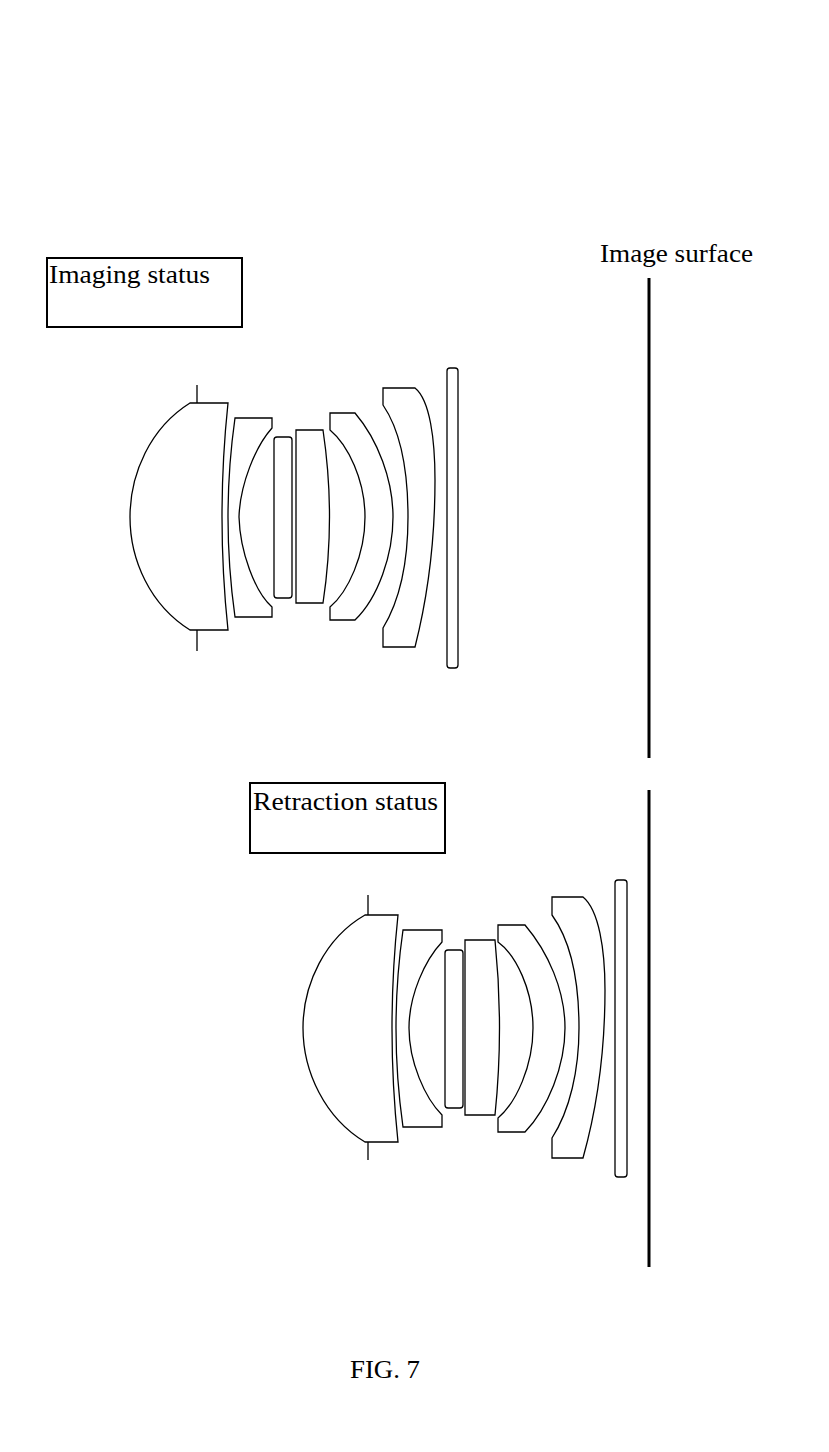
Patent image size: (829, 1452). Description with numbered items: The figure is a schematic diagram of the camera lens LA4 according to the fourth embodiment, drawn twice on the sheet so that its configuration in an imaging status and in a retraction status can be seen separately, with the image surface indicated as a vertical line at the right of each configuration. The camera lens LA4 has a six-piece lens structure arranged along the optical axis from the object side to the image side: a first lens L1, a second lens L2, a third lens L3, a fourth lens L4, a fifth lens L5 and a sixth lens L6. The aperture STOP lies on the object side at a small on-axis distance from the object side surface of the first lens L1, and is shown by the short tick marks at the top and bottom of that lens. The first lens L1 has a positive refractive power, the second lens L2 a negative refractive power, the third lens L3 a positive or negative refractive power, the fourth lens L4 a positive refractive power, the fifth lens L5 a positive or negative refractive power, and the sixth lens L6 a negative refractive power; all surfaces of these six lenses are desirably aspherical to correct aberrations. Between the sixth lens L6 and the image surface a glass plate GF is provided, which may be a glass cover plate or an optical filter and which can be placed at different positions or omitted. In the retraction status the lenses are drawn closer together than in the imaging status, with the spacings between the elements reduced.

The camera lens LA4 is at (298, 345).
The aperture STOP is at (197, 536).
The first lens L1 is at (179, 503).
The second lens L2 is at (250, 501).
The third lens L3 is at (286, 500).
The fourth lens L4 is at (313, 503).
The fifth lens L5 is at (361, 501).
The sixth lens L6 is at (409, 499).
The glass plate GF is at (455, 499).